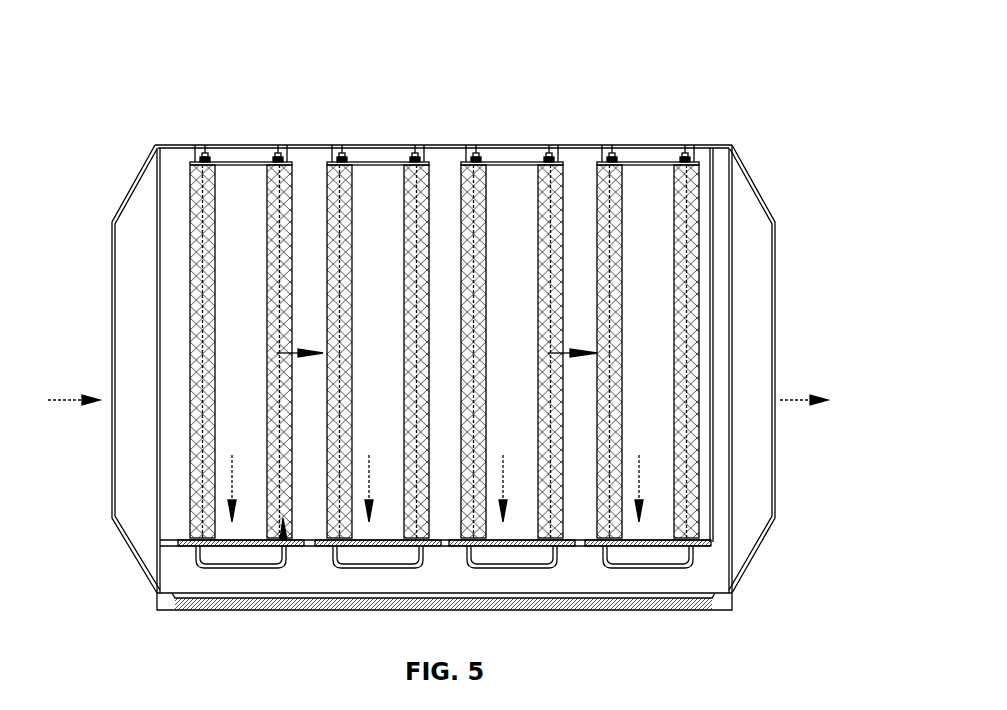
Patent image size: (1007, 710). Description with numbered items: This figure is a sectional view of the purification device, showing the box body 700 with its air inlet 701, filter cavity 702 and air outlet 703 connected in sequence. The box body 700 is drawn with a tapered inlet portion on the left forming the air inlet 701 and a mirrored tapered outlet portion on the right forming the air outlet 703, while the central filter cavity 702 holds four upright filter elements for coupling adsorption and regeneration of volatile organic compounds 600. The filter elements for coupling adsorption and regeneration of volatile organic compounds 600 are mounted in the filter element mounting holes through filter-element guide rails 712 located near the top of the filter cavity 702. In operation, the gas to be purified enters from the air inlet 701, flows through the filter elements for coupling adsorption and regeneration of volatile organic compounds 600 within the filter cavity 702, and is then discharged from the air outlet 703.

The box body 700 is at (380, 50).
The air inlet 701 is at (112, 222).
The filter cavity 702 is at (248, 157).
The filter-element guide rails 712 is at (340, 150).
The air outlet 703 is at (775, 325).
The filter elements for coupling adsorption and regeneration of volatile organic com 600 is at (663, 580).